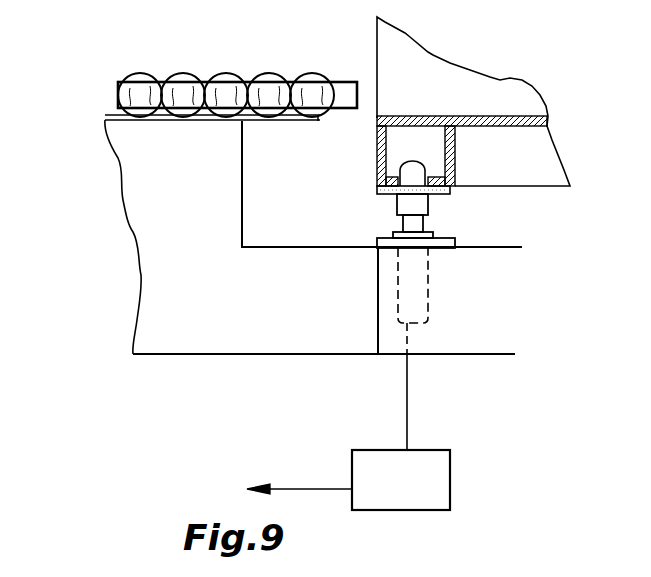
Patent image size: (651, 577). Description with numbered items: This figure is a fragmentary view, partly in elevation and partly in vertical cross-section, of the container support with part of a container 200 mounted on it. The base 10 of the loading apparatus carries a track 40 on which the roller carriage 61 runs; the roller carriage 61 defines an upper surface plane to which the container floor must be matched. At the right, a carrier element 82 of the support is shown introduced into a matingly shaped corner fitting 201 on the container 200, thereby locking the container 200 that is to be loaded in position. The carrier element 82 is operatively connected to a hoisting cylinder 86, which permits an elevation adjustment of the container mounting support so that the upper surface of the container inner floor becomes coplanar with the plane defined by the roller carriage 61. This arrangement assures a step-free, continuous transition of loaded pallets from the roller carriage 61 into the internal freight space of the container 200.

The base 10 is at (141, 229).
The track 40 is at (275, 121).
The roller carriage 61 is at (178, 72).
The container 200 is at (500, 85).
The corner fitting 201 is at (447, 191).
The carrier element 82 is at (403, 212).
The hoisting cylinder 86 is at (425, 294).